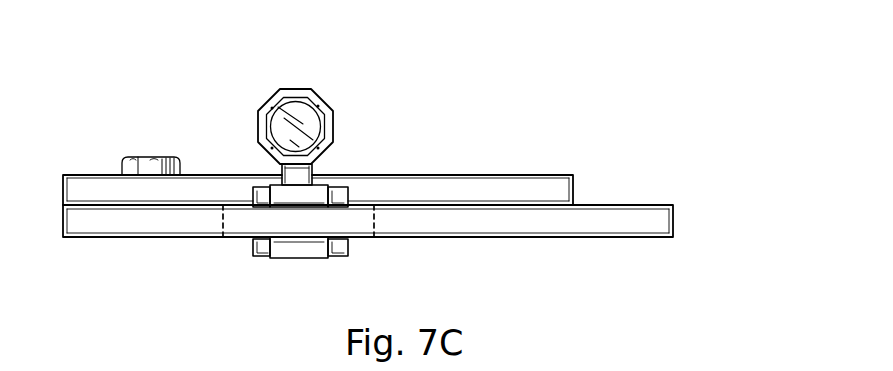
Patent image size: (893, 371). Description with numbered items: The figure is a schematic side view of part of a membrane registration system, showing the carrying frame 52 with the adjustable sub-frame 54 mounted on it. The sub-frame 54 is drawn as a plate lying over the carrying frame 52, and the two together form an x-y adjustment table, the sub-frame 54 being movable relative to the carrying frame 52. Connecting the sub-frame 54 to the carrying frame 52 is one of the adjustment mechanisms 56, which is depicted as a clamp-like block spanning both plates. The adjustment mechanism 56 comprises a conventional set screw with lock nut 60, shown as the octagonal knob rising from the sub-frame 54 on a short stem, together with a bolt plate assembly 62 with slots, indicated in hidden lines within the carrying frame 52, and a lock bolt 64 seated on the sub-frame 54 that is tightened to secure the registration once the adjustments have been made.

The carrying frame 52 is at (620, 218).
The adjustable sub-frame 54 is at (522, 185).
The adjustment mechanism 56 is at (485, 82).
The set screw with lock nut 60 is at (330, 96).
The bolt plate assembly 62 is at (375, 220).
The lock bolt 64 is at (108, 175).